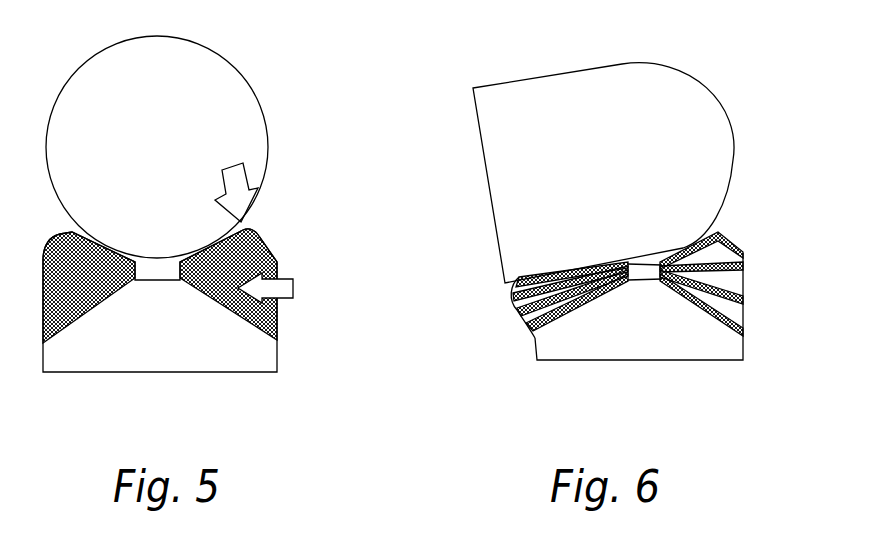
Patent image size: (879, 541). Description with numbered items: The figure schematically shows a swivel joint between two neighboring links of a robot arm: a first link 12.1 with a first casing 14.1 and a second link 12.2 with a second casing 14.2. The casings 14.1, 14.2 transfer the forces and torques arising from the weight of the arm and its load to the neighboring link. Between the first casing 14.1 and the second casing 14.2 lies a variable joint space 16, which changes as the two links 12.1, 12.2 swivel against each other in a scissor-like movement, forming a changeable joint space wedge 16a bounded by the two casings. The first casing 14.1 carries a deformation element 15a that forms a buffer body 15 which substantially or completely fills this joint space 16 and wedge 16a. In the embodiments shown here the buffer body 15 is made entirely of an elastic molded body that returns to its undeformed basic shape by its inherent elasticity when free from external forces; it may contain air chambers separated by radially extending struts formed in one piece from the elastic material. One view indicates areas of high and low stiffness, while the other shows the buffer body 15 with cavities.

In FIG. 5, the first link 12.1 is at (259, 281).
In FIG. 6, the first link 12.1 is at (591, 288).
In FIG. 5, the first casing 14.1 is at (259, 281).
In FIG. 6, the first casing 14.1 is at (591, 288).
In FIG. 5, the second link 12.2 is at (254, 133).
In FIG. 6, the second link 12.2 is at (584, 165).
In FIG. 5, the second casing 14.2 is at (222, 78).
In FIG. 6, the second casing 14.2 is at (505, 103).
In FIG. 5, the buffer body 15 is at (243, 286).
In FIG. 6, the buffer body 15 is at (594, 285).
In FIG. 5, the deformation element 15a is at (272, 255).
In FIG. 6, the deformation element 15a is at (520, 313).
In FIG. 5, the joint space 16 is at (344, 197).
In FIG. 6, the joint space 16 is at (474, 254).
In FIG. 5, the joint space wedge 16a is at (256, 222).
In FIG. 6, the joint space wedge 16a is at (440, 208).